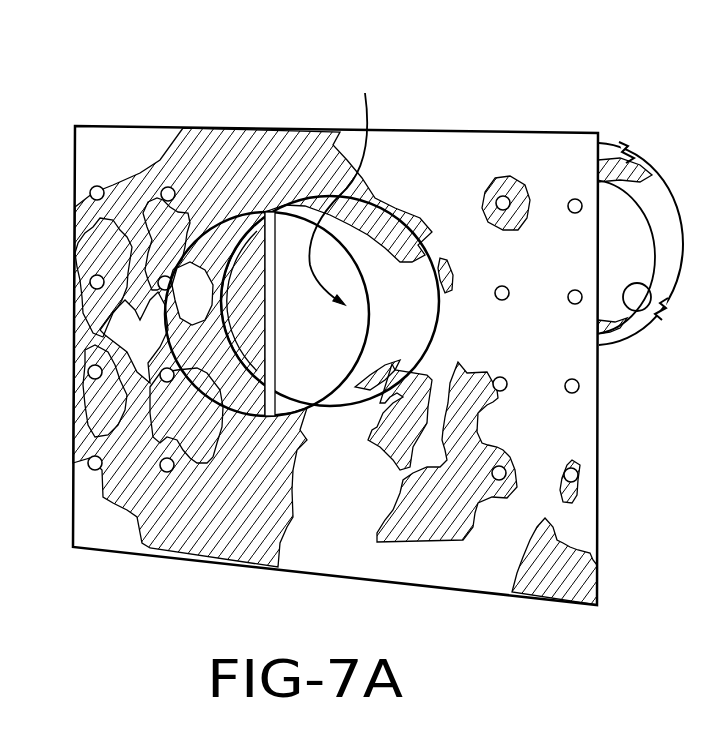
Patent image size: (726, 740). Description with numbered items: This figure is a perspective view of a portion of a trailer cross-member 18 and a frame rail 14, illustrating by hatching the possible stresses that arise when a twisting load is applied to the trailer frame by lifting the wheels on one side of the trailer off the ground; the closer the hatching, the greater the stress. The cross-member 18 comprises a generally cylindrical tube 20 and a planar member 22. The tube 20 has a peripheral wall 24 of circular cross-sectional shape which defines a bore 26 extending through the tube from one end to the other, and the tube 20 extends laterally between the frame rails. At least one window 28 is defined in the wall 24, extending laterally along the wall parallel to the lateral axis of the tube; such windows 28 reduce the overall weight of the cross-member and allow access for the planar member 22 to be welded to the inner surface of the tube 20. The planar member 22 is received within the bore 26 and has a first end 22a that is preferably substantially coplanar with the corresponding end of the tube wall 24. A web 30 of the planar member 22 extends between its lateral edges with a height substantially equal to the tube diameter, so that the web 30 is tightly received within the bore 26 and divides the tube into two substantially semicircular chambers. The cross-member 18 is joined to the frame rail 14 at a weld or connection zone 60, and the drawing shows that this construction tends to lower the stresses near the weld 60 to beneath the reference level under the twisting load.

The frame rail 14 is at (483, 567).
The cross-member 18 is at (346, 339).
The tube 20 is at (670, 180).
The planar member 22 is at (620, 247).
The first end 22a is at (270, 334).
The peripheral wall 24 is at (614, 222).
The bore 26 is at (345, 186).
The window 28 is at (637, 312).
The web 30 is at (297, 362).
The connection zone 60 is at (427, 332).